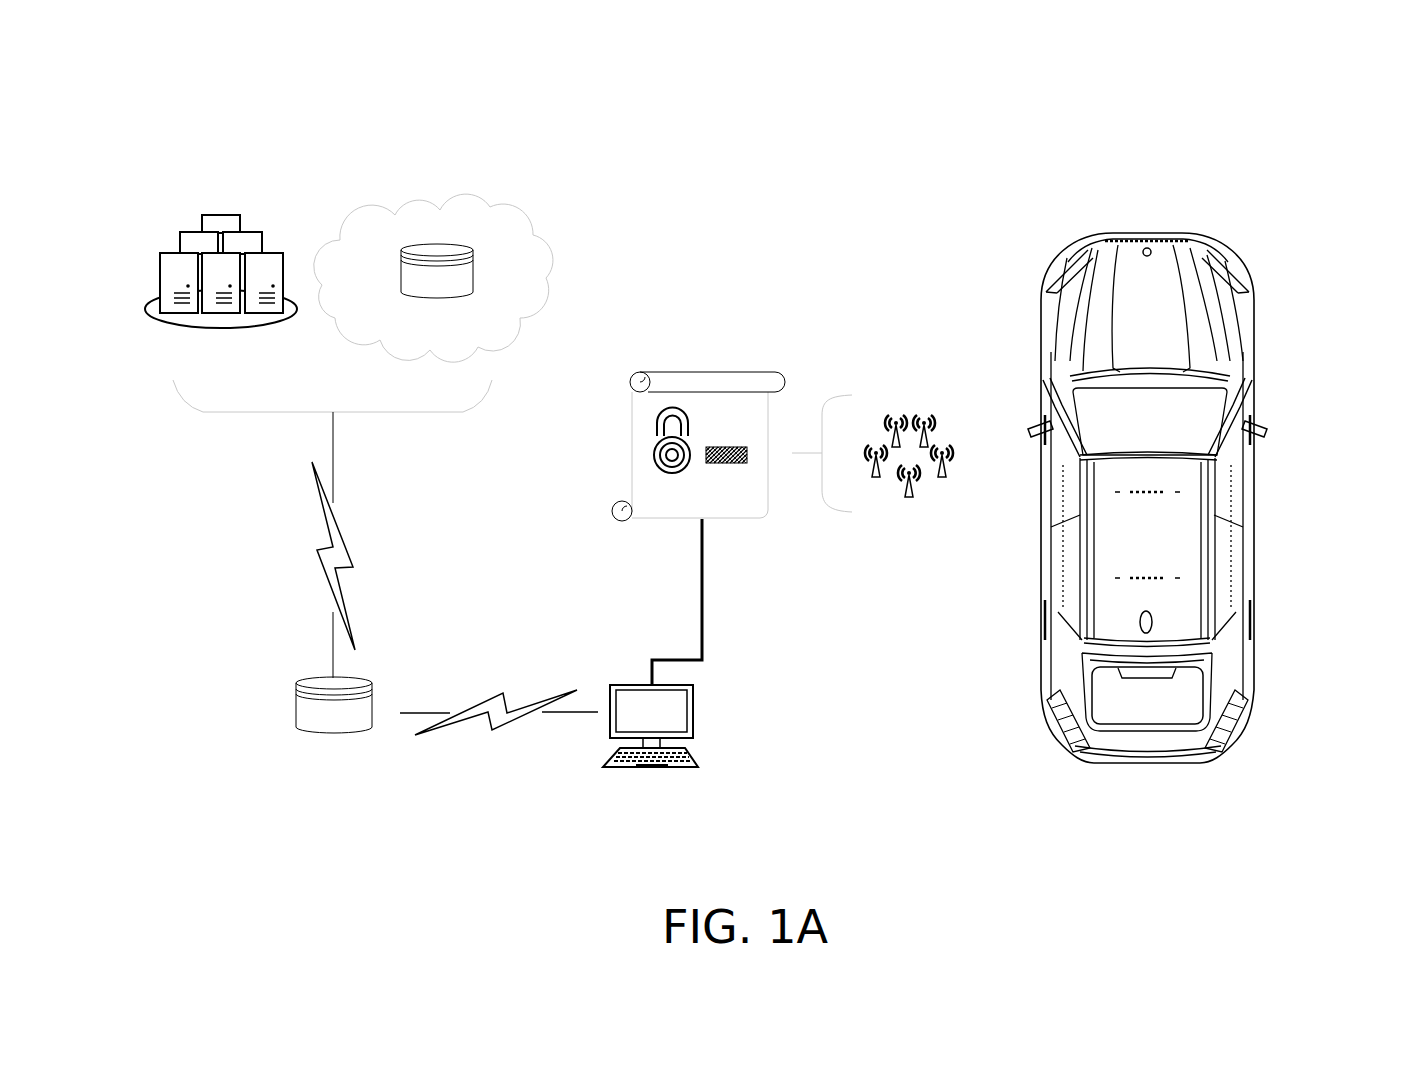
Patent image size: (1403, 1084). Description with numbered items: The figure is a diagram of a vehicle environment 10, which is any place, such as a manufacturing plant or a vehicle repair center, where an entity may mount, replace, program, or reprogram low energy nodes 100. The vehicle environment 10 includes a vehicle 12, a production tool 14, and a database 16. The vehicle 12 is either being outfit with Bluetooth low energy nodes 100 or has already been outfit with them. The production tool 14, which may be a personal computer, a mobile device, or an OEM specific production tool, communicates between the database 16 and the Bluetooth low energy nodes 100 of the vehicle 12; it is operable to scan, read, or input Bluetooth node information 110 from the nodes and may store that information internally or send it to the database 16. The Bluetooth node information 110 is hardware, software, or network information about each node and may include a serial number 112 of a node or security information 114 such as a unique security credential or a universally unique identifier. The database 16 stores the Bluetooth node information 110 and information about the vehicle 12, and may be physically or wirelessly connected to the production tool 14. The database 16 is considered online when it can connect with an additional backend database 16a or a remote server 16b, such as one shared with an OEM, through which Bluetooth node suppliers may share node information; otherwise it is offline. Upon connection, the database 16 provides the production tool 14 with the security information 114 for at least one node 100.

The vehicle environment 10 is at (1253, 98).
The vehicle 12 is at (1275, 427).
The production tool 14 is at (693, 712).
The database 16 is at (291, 703).
The backend database 16a is at (455, 207).
The remote server 16b is at (203, 215).
The Bluetooth low energy node 100 is at (897, 546).
The Bluetooth node information 110 is at (727, 368).
The serial number 112 is at (720, 467).
The security information 114 is at (654, 463).